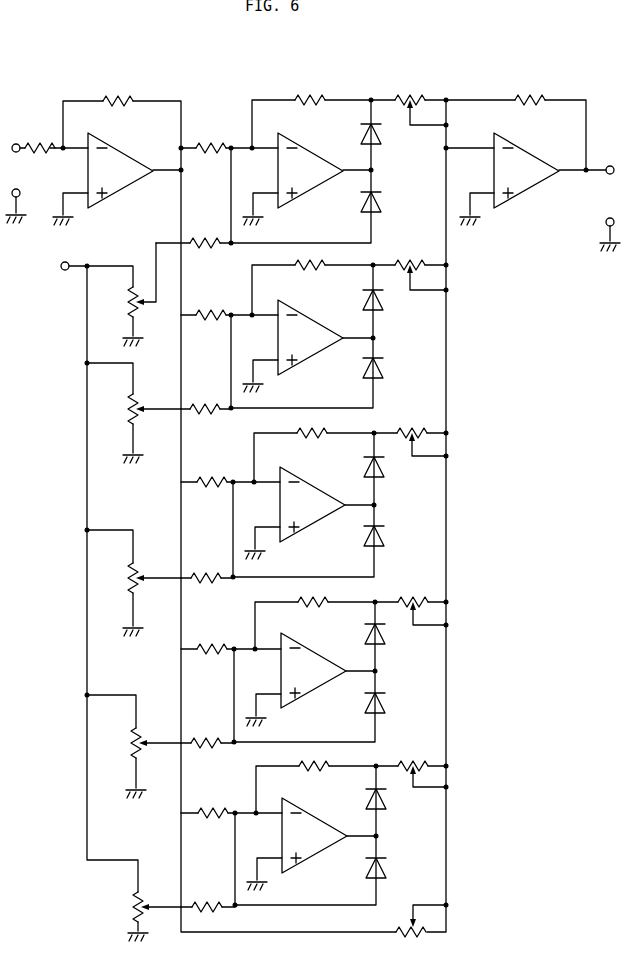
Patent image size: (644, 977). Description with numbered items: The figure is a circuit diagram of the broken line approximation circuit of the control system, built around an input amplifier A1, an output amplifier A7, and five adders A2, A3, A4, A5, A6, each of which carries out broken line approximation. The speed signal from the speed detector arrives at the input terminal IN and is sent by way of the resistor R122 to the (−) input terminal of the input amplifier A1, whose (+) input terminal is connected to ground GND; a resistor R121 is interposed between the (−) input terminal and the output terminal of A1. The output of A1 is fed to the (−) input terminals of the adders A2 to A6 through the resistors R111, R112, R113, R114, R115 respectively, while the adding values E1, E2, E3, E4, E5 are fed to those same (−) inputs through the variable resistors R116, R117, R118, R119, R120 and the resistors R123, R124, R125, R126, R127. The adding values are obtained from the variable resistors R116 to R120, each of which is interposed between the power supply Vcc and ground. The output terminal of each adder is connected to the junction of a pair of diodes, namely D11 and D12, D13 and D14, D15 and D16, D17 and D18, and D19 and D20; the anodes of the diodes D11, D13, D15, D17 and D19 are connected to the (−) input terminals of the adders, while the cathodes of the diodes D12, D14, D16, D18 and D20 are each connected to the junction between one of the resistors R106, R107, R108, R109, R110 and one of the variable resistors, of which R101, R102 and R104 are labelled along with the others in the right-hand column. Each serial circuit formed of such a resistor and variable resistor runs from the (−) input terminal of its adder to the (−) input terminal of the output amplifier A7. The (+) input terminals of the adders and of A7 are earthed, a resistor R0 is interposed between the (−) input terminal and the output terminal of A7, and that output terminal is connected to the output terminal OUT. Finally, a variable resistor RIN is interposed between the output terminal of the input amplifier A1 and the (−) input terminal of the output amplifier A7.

The input terminal IN is at (16, 183).
The output terminal OUT is at (615, 208).
The power supply Vcc is at (53, 267).
The ground GND is at (80, 231).
The input amplifier A1 is at (120, 170).
The adder A2 is at (314, 835).
The adder A3 is at (313, 670).
The adder A4 is at (312, 504).
The adder A5 is at (310, 337).
The adder A6 is at (310, 170).
The output amplifier A7 is at (526, 170).
The diode D11 is at (398, 867).
The diode D12 is at (398, 807).
The diode D13 is at (396, 702).
The diode D14 is at (396, 642).
The diode D15 is at (395, 535).
The diode D16 is at (395, 475).
The diode D17 is at (394, 368).
The diode D18 is at (394, 308).
The diode D19 is at (392, 202).
The diode D20 is at (392, 142).
The adding value E1 is at (146, 910).
The adding value E2 is at (145, 747).
The adding value E3 is at (144, 582).
The adding value E4 is at (144, 412).
The adding value E5 is at (128, 278).
The resistor R0 is at (516, 123).
The variable resistor RIN is at (413, 943).
The variable resistor R101 is at (420, 756).
The variable resistor R102 is at (420, 592).
The variable resistor R104 is at (418, 256).
The resistor R106 is at (321, 777).
The resistor R107 is at (321, 592).
The resistor R108 is at (320, 423).
The resistor R109 is at (319, 256).
The resistor R110 is at (319, 90).
The resistor R111 is at (213, 803).
The resistor R112 is at (212, 639).
The resistor R113 is at (212, 472).
The resistor R114 is at (211, 305).
The resistor R115 is at (211, 137).
The variable resistor R116 is at (159, 914).
The variable resistor R117 is at (157, 760).
The variable resistor R118 is at (155, 596).
The variable resistor R119 is at (155, 425).
The variable resistor R120 is at (153, 316).
The resistor R121 is at (122, 112).
The resistor R122 is at (40, 137).
The resistor R123 is at (208, 898).
The resistor R124 is at (207, 733).
The resistor R125 is at (207, 567).
The resistor R126 is at (207, 399).
The resistor R127 is at (193, 233).